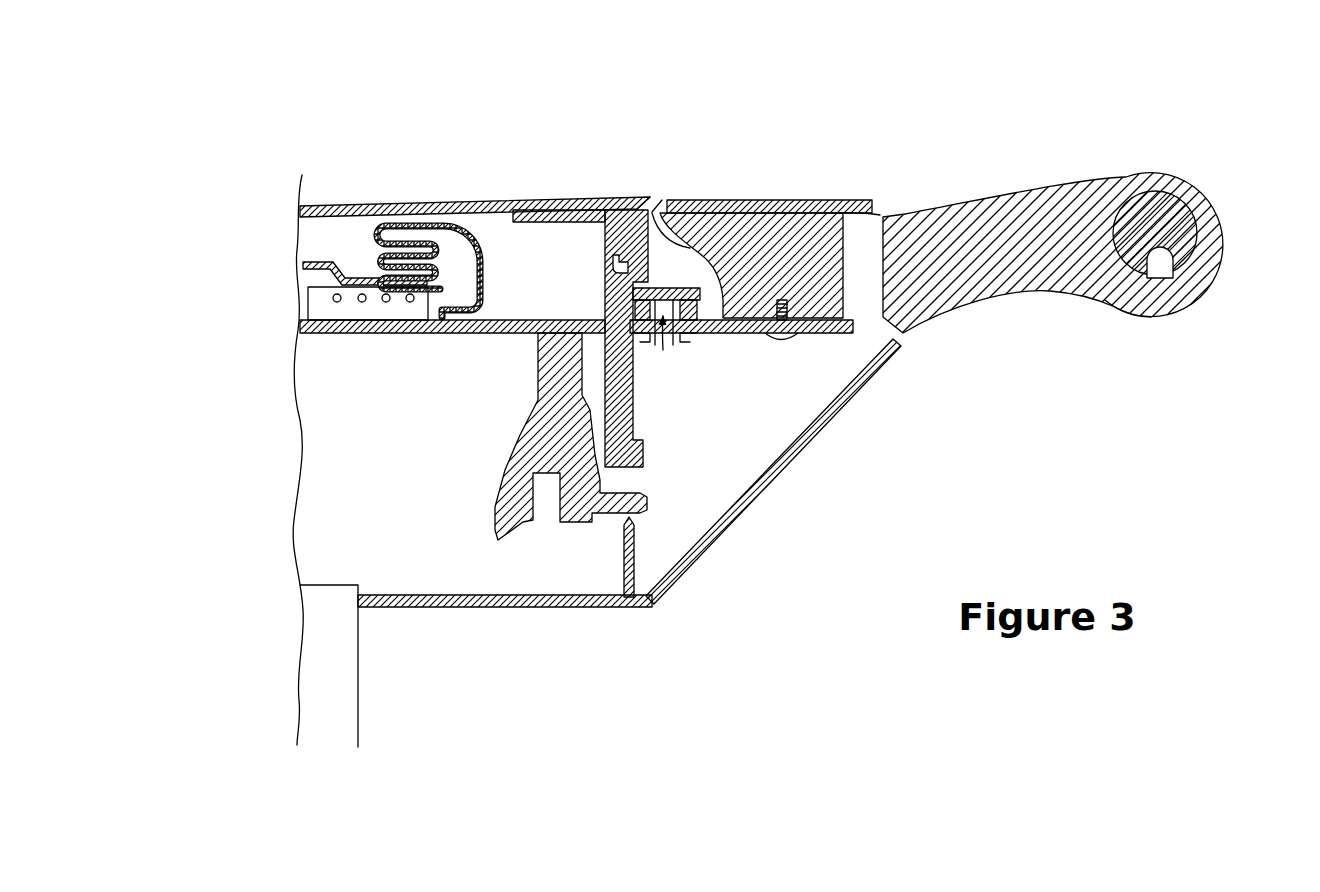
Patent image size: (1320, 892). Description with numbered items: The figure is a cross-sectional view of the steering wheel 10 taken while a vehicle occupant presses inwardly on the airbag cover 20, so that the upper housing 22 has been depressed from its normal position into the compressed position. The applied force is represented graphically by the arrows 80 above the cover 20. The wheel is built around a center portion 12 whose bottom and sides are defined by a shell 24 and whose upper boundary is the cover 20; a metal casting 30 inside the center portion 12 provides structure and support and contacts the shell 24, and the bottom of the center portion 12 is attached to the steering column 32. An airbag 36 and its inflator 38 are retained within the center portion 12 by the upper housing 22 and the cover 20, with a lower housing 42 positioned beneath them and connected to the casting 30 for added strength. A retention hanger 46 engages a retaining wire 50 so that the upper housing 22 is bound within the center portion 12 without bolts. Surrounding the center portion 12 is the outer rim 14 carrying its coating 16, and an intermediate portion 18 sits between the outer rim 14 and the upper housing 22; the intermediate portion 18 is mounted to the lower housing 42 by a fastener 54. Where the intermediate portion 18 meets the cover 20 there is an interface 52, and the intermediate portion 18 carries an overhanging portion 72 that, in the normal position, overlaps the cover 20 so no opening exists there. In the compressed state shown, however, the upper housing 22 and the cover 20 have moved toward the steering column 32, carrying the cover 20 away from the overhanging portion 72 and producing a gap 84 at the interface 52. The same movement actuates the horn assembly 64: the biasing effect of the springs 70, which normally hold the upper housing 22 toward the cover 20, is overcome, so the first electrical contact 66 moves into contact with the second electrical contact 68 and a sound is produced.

The steering wheel 10 is at (294, 185).
The center portion 12 is at (434, 556).
The outer rim 14 is at (1172, 228).
The coating 16 is at (1125, 295).
The intermediate portion 18 is at (868, 208).
The airbag cover 20 is at (541, 197).
The upper housing 22 is at (612, 205).
The shell 24 is at (492, 608).
The casting 30 is at (522, 530).
The steering column 32 is at (340, 727).
The airbag 36 is at (372, 236).
The inflator 38 is at (315, 299).
The lower housing 42 is at (332, 327).
The retention hanger 46 is at (637, 465).
The retaining wire 50 is at (637, 440).
The interface 52 is at (707, 200).
The fastener 54 is at (790, 338).
The horn assembly 64 is at (677, 340).
The first electrical contact 66 is at (707, 337).
The second electrical contact 68 is at (697, 337).
The spring 70 is at (690, 337).
The overhanging portion 72 is at (662, 200).
The arrows 80 is at (477, 170).
The gap 84 is at (644, 192).